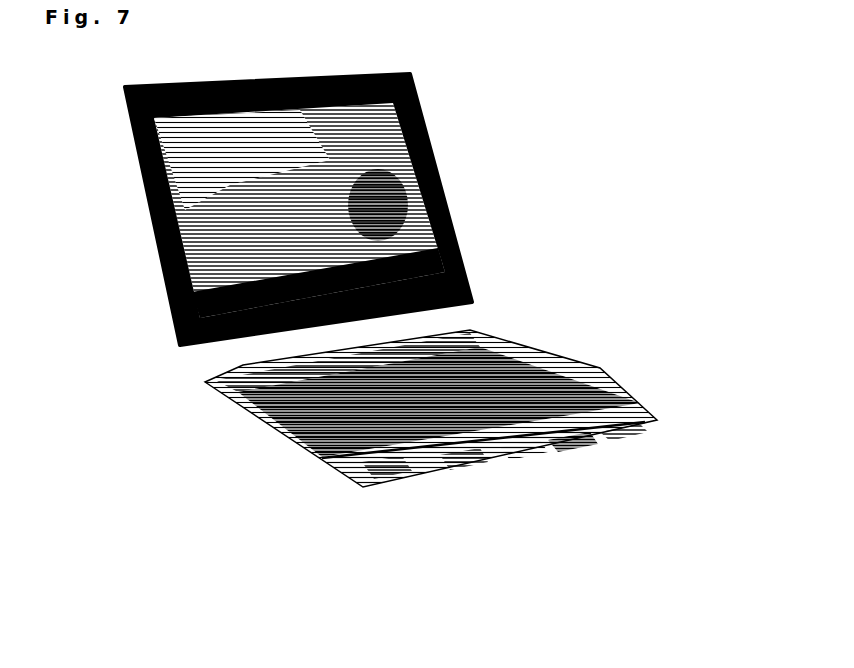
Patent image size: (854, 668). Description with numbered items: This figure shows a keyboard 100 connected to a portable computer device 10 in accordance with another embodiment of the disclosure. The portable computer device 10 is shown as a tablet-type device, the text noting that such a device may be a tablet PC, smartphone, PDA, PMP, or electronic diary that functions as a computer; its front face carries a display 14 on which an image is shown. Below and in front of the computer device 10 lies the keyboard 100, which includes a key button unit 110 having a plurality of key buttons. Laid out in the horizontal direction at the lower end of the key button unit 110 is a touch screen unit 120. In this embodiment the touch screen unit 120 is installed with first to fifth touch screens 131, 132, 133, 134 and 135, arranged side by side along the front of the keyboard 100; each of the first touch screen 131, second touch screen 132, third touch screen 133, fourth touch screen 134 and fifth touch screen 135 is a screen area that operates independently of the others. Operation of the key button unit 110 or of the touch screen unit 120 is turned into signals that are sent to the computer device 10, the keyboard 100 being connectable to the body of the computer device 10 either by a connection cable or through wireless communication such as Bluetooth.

The computer device 10 is at (147, 190).
The display 14 is at (383, 127).
The keyboard 100 is at (449, 433).
The key button unit 110 is at (533, 358).
The touch screen unit 120 is at (633, 408).
The first touch screen 131 is at (647, 425).
The second touch screen 132 is at (517, 442).
The third touch screen 133 is at (382, 463).
The fourth touch screen 134 is at (570, 433).
The fifth touch screen 135 is at (455, 453).